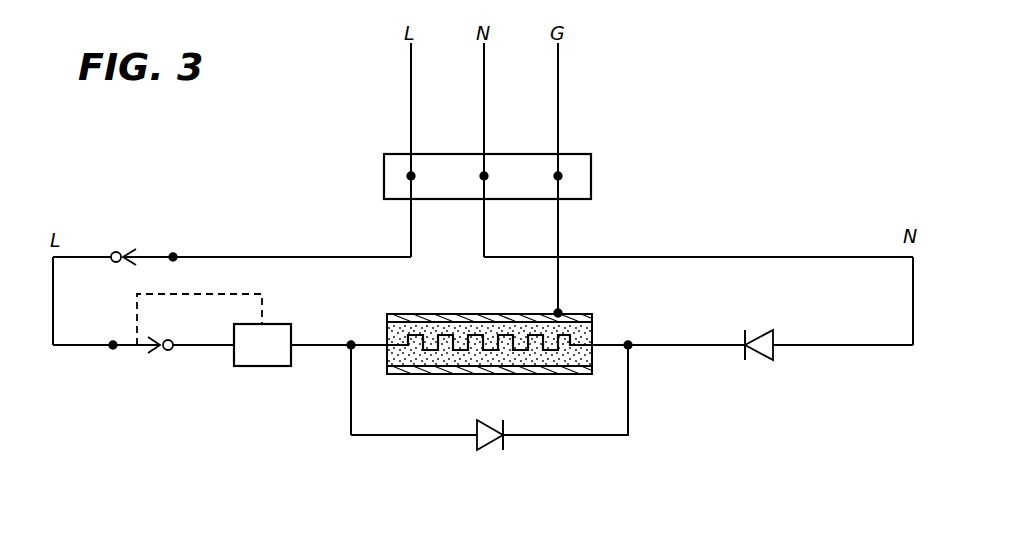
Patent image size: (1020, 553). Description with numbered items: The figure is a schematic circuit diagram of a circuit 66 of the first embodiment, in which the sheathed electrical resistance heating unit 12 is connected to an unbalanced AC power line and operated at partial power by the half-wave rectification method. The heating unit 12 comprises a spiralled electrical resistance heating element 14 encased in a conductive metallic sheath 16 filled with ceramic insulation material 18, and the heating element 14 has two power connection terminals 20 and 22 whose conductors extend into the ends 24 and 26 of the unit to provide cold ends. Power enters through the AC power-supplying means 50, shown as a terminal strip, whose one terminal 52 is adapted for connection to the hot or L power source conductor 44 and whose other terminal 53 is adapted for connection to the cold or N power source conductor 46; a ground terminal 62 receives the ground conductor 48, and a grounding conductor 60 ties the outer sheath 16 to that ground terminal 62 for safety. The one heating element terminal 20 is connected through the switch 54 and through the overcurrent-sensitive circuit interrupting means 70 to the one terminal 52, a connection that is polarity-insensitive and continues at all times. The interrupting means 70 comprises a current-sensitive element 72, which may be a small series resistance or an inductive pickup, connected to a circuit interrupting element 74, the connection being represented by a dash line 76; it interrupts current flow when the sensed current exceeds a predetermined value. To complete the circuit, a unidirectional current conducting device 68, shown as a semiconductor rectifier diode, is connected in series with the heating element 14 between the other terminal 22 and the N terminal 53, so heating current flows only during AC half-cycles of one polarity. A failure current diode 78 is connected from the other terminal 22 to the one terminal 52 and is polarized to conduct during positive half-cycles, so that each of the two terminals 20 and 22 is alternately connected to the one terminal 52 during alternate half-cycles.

The sheathed electrical resistance heating unit 12 is at (482, 346).
The electrical resistance heating element 14 is at (429, 393).
The conductive metallic sheath 16 is at (572, 374).
The ceramic insulation material 18 is at (480, 330).
The power connection terminal 20 is at (351, 345).
The power connection terminal 22 is at (628, 345).
The end of the heating unit 24 is at (390, 314).
The end of the heating unit 26 is at (592, 318).
The AC power source conductor 44 is at (411, 108).
The AC power source conductor 46 is at (484, 91).
The ground conductor 48 is at (558, 84).
The AC power-supplying means 50 is at (591, 164).
The terminal 52 is at (411, 176).
The terminal 53 is at (484, 176).
The switch 54 is at (148, 257).
The grounding conductor 60 is at (558, 233).
The ground terminal 62 is at (558, 176).
The circuit 66 is at (214, 480).
The unidirectional current conducting device 68 is at (770, 333).
The overcurrent-sensitive circuit interrupting means 70 is at (176, 388).
The current-sensitive element 72 is at (250, 366).
The circuit interrupting element 74 is at (128, 348).
The dash line 76 is at (262, 305).
The failure current diode 78 is at (485, 440).